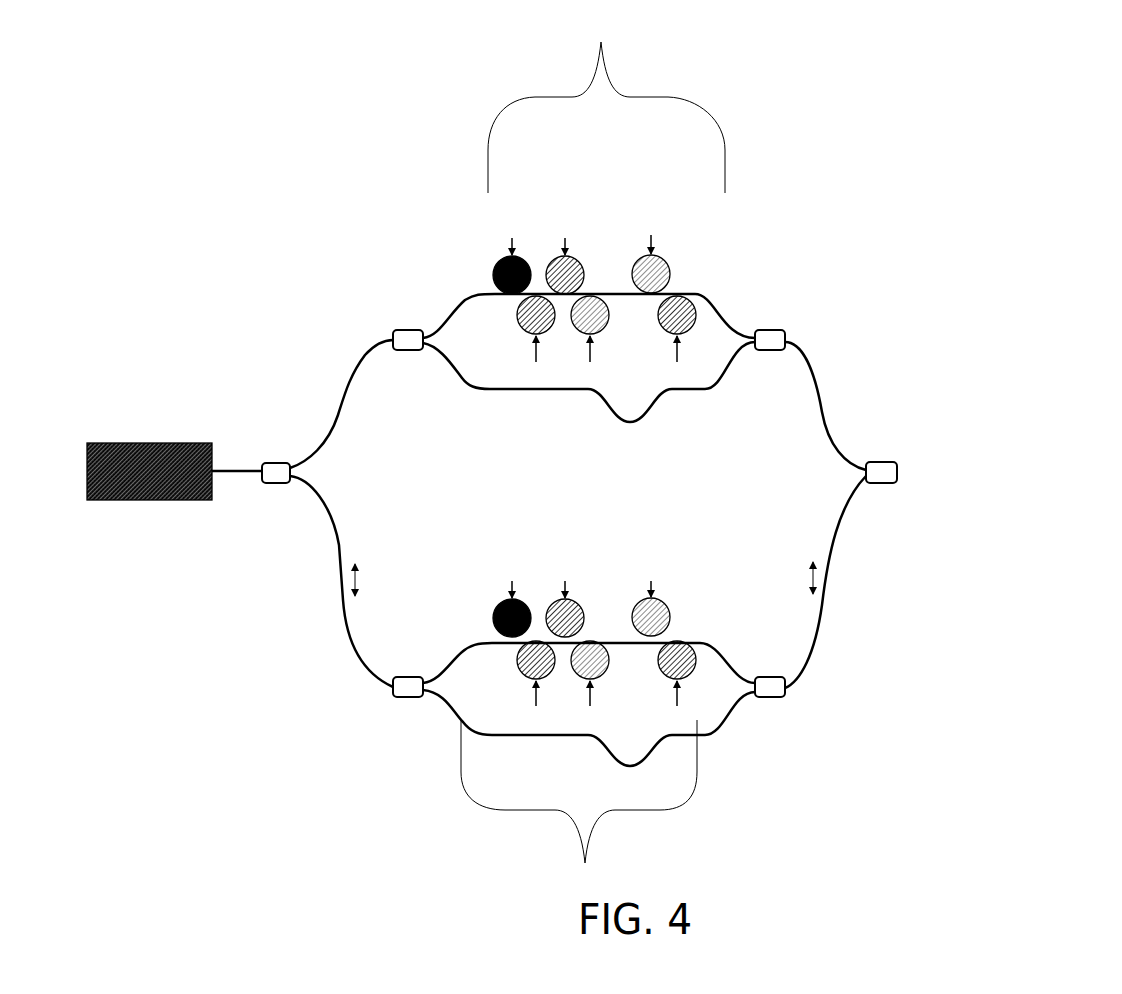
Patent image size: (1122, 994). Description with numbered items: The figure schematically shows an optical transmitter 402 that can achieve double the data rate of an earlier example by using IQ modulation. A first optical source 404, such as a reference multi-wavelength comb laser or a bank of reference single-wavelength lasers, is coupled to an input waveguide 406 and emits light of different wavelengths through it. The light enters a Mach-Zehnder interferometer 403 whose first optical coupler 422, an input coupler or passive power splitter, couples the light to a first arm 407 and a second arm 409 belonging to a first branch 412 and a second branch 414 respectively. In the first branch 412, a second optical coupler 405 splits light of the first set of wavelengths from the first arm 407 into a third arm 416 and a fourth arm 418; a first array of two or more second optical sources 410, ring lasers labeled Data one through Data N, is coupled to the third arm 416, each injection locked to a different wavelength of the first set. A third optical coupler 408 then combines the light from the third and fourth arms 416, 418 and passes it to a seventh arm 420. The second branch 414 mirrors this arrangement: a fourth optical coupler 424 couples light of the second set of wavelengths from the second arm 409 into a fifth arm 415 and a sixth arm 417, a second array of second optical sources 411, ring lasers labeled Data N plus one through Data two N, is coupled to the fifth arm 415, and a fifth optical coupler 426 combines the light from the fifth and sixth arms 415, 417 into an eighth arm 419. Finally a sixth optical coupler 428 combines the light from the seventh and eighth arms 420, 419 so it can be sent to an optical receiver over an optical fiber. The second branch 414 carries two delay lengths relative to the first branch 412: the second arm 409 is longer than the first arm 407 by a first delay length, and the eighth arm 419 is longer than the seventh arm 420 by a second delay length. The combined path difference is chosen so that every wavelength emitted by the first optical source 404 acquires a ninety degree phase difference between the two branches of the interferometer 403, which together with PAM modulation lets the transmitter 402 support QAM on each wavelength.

The optical transmitter 402 is at (198, 126).
The Mach-Zehnder interferometer 403 is at (290, 438).
The first optical source 404 is at (149, 471).
The second optical coupler 405 is at (397, 333).
The input waveguide 406 is at (238, 470).
The first arm 407 is at (342, 408).
The third optical coupler 408 is at (775, 330).
The second arm 409 is at (343, 607).
The first array of second optical sources 410 is at (606, 220).
The second array of second optical sources 411 is at (579, 693).
The first branch 412 is at (297, 360).
The second branch 414 is at (291, 606).
The fifth arm 415 is at (460, 660).
The third arm 416 is at (489, 294).
The sixth arm 417 is at (457, 703).
The fourth arm 418 is at (462, 382).
The eighth arm 419 is at (843, 493).
The seventh arm 420 is at (820, 374).
The first optical coupler 422 is at (273, 483).
The fourth optical coupler 424 is at (405, 690).
The fifth optical coupler 426 is at (775, 690).
The sixth optical coupler 428 is at (897, 465).